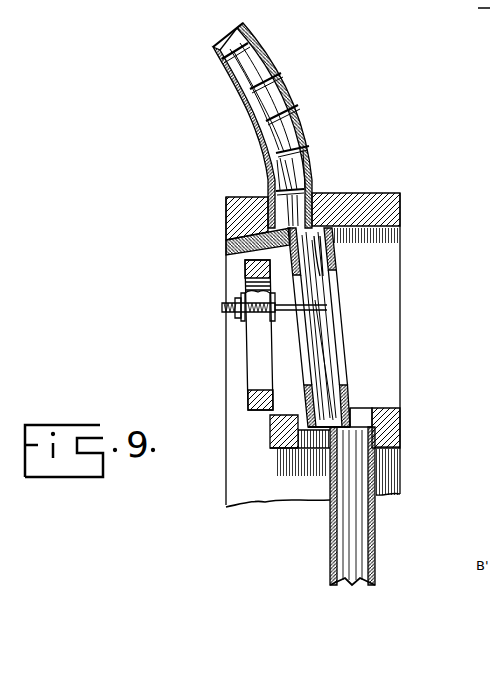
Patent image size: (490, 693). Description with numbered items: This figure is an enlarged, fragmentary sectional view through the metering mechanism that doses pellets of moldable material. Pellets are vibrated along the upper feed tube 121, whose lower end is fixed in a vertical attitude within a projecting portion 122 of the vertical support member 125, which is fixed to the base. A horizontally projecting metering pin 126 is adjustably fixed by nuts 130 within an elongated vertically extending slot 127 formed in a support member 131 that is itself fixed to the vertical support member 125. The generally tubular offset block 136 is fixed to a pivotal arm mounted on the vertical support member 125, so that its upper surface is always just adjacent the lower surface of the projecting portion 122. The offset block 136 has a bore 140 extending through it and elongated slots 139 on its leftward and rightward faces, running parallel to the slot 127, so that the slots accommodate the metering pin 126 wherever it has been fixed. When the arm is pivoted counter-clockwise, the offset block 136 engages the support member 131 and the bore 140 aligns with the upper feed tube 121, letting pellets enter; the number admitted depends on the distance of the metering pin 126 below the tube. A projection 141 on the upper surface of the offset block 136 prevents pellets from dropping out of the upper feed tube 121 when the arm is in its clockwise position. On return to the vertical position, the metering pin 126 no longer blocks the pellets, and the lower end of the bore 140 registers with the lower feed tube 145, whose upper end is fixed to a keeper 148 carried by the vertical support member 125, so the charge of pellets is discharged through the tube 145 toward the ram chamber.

The upper feed tube 121 is at (309, 125).
The projecting portion 122 is at (356, 195).
The vertical support member 125 is at (384, 298).
The metering pin 126 is at (310, 304).
The elongated vertically extending slot 127 is at (255, 337).
The nuts 130 is at (243, 300).
The support member 131 is at (248, 392).
The offset block 136 is at (350, 398).
The elongated slots 139 is at (300, 360).
The bore 140 is at (311, 276).
The projection 141 is at (232, 252).
The lower feed tube 145 is at (330, 536).
The keeper 148 is at (272, 433).